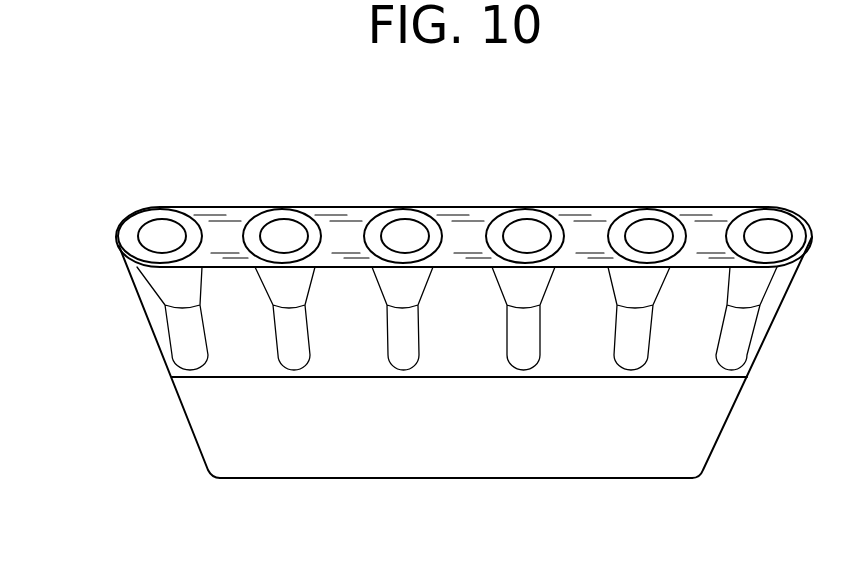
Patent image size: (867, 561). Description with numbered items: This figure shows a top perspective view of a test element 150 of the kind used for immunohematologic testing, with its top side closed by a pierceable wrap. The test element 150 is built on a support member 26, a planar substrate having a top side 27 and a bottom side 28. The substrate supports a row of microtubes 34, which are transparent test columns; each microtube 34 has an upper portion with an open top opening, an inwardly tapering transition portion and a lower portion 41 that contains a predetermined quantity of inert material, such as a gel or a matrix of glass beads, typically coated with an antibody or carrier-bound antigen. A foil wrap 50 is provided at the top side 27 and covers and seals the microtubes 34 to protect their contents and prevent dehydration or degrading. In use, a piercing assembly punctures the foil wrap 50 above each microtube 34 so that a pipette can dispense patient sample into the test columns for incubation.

The test element 150 is at (146, 306).
The support member 26 is at (222, 433).
The top side 27 is at (452, 233).
The bottom side 28 is at (600, 478).
The foil wrap 50 is at (162, 232).
The microtubes 34 is at (273, 322).
The lower portion 41 is at (188, 355).